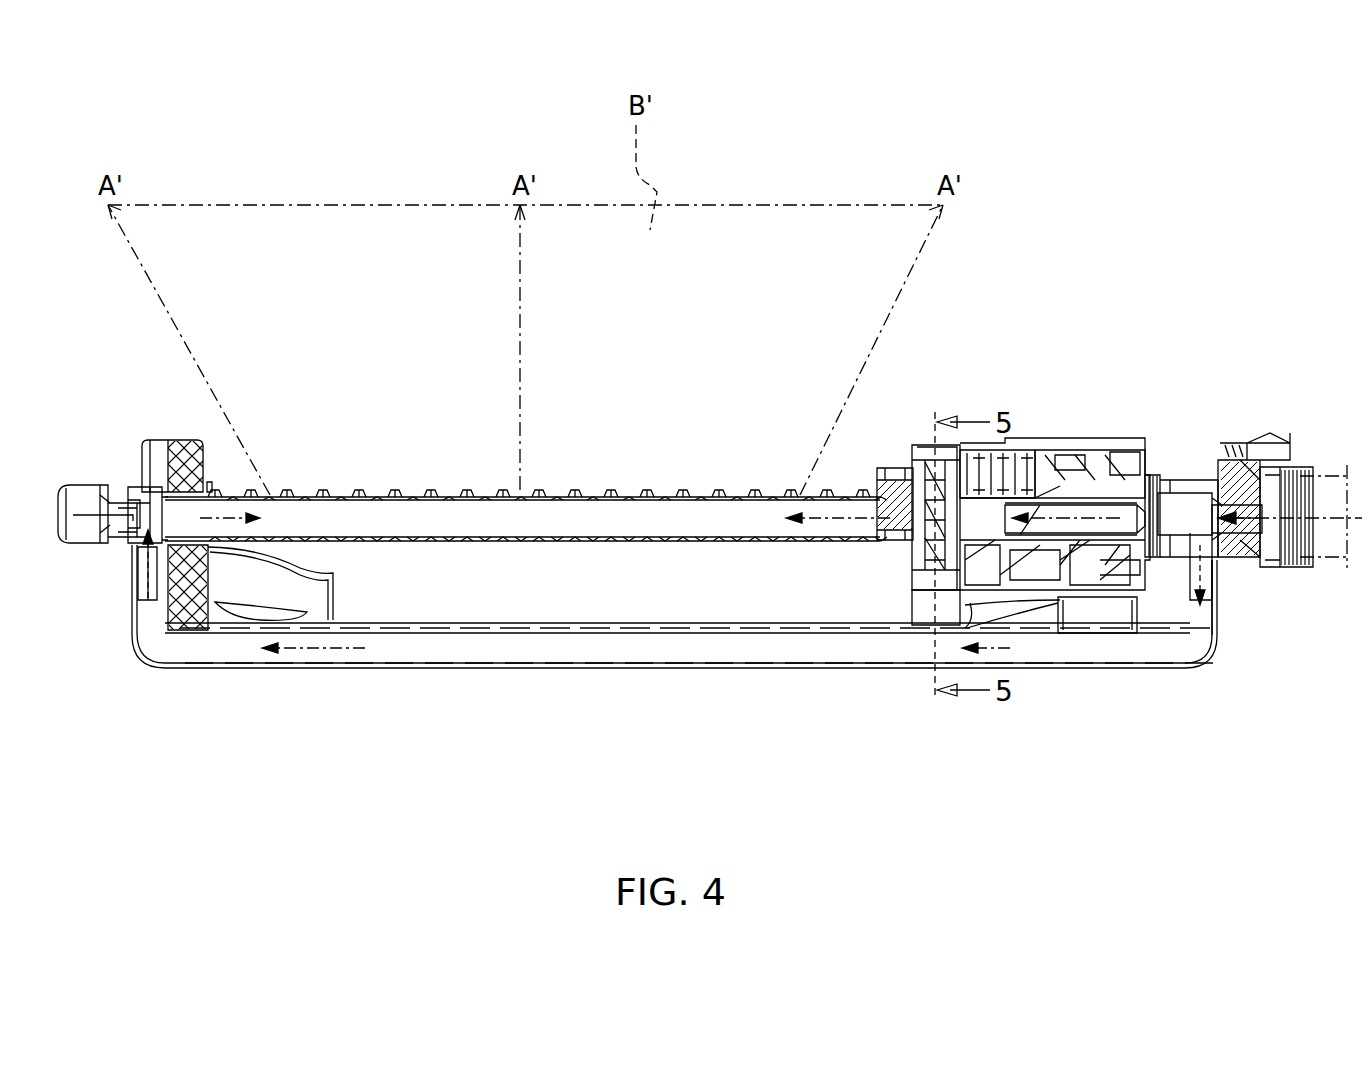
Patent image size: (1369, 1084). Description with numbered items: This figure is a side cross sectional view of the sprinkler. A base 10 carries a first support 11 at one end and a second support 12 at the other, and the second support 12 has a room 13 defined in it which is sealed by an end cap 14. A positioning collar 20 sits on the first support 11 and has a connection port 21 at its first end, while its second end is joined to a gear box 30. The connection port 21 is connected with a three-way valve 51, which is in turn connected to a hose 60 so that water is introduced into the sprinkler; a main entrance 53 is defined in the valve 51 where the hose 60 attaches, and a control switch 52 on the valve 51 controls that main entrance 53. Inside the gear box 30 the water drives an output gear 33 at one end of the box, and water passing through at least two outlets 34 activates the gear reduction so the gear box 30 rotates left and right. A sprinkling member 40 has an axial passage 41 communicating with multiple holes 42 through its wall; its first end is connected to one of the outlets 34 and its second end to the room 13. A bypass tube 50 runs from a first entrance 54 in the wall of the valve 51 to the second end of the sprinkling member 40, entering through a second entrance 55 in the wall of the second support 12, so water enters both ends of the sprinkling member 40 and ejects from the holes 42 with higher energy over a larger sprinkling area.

The base 10 is at (181, 440).
The first support 11 is at (1108, 612).
The second support 12 is at (190, 622).
The room 13 is at (143, 497).
The end cap 14 is at (68, 485).
The positioning collar 20 is at (1091, 440).
The connection port 21 is at (1150, 500).
The gear box 30 is at (1028, 440).
The output gear 33 is at (917, 492).
The outlets 34 is at (925, 558).
The sprinkling member 40 is at (758, 560).
The passage 41 is at (428, 523).
The holes 42 is at (628, 490).
The bypass tube 50 is at (565, 665).
The valve 51 is at (1200, 492).
The control switch 52 is at (1248, 442).
The main entrance 53 is at (1240, 520).
The first entrance 54 is at (1213, 572).
The second entrance 55 is at (137, 558).
The hose 60 is at (1322, 485).